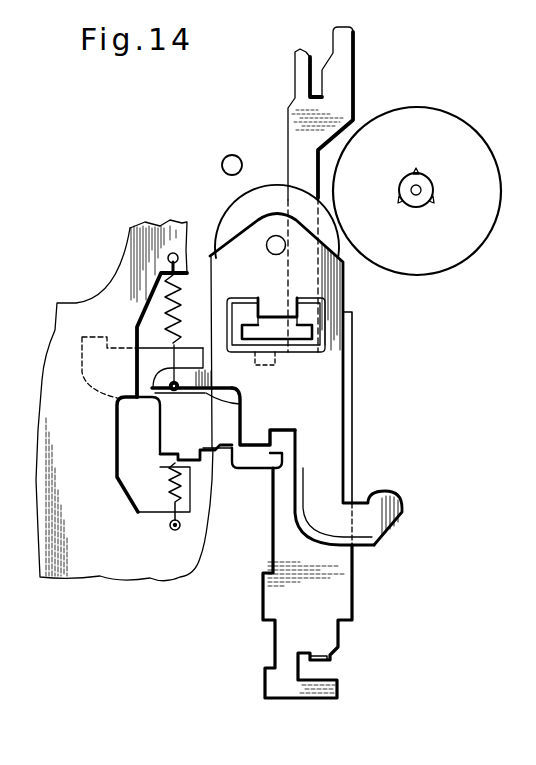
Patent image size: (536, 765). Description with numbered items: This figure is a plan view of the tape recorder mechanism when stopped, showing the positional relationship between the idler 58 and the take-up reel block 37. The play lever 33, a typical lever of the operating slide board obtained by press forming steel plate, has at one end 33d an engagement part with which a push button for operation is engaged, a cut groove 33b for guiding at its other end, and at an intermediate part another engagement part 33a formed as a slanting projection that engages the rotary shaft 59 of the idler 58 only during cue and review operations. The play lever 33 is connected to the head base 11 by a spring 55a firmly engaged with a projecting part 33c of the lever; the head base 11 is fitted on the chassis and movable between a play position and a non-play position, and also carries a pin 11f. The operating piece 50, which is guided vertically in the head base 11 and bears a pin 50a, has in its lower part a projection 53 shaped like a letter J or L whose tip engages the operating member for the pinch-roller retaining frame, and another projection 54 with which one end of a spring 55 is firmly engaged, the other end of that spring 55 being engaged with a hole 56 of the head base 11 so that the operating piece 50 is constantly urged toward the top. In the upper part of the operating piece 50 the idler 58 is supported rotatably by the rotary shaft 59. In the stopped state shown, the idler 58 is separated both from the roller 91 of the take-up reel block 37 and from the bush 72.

The head base 11 is at (126, 562).
The pin on frame 11f is at (180, 530).
The play lever 33 is at (348, 80).
The engagement part 33a is at (277, 256).
The cut groove 33b is at (316, 76).
The projecting part 33c is at (170, 453).
The one end of the play lever 33d is at (313, 663).
The take-up reel block 37 is at (417, 208).
The operating piece 50 is at (344, 392).
The pin of slider 50a is at (174, 391).
The projection 53 is at (365, 487).
The projection 54 is at (236, 397).
The spring 55 is at (166, 295).
The spring 55a is at (178, 496).
The hole 56 is at (175, 252).
The idler 58 is at (264, 186).
The rotary shaft 59 is at (266, 243).
The bush 72 is at (223, 158).
The roller 91 is at (494, 155).